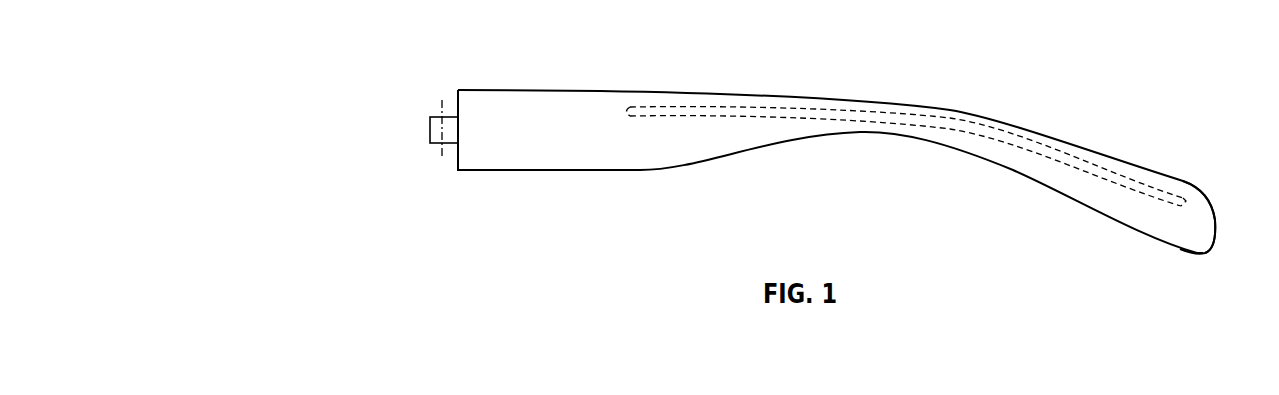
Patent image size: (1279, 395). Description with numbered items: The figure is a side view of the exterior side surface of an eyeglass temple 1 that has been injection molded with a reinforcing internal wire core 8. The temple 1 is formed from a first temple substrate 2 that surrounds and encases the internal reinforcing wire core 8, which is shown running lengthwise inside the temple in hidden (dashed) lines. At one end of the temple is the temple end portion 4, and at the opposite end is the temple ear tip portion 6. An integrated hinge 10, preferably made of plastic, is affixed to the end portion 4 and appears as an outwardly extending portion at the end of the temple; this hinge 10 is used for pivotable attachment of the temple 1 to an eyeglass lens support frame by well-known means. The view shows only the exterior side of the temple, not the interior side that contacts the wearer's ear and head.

The eyeglass temple 1 is at (827, 19).
The first temple substrate 2 is at (551, 100).
The temple end portion 4 is at (458, 166).
The temple ear tip portion 6 is at (1206, 251).
The reinforcing internal wire core 8 is at (752, 108).
The integrated hinge 10 is at (430, 128).